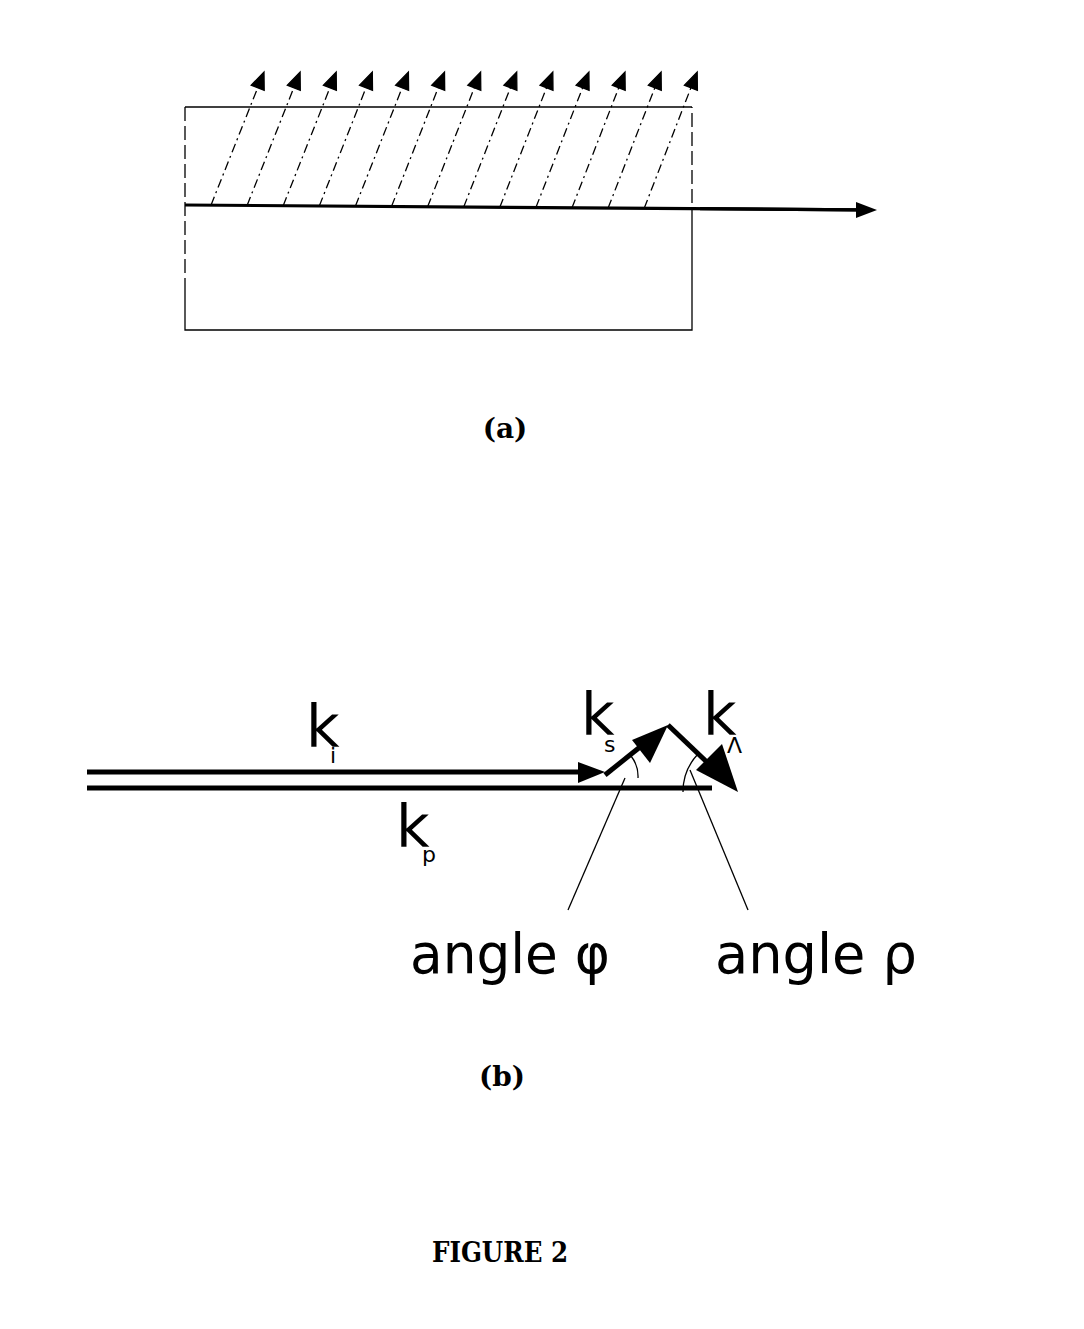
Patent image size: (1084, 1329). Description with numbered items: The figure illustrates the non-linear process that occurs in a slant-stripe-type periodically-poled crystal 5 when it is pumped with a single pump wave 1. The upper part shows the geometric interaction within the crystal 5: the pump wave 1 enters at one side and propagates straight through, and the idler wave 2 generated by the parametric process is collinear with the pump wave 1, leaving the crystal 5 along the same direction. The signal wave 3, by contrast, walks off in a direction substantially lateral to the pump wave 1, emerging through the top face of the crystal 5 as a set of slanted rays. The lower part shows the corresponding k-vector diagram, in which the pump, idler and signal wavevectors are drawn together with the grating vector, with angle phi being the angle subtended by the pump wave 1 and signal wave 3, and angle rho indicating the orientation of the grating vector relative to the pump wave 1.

The pump wave 1 is at (152, 203).
The idler wave 2 is at (870, 218).
The signal wave 3 is at (482, 80).
The slant-stripe-type periodically-poled crystal 5 is at (233, 292).